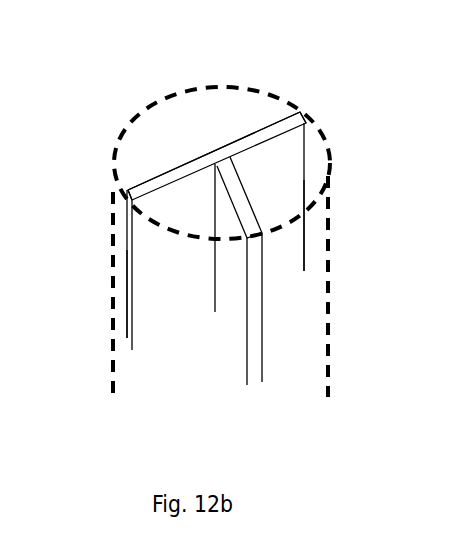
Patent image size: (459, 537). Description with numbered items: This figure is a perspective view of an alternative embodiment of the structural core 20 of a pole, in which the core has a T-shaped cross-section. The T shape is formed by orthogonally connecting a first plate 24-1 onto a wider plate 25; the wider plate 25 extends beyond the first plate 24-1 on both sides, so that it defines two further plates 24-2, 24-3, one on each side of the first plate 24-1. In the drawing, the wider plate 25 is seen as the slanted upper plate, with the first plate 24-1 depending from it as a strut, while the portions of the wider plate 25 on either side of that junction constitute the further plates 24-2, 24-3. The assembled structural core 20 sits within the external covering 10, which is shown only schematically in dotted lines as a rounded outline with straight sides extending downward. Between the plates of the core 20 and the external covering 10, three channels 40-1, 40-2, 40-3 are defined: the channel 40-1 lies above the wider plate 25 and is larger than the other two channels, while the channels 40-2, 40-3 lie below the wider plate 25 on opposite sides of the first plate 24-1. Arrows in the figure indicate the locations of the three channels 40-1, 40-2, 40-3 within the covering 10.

The external covering 10 is at (330, 332).
The structural core 20 is at (187, 165).
The wider plate 25 is at (232, 146).
The first plate 24-1 is at (232, 213).
The further plate 24-2 is at (155, 182).
The further plate 24-3 is at (268, 133).
The channel 40-1 is at (238, 113).
The channel 40-2 is at (187, 205).
The channel 40-3 is at (272, 168).